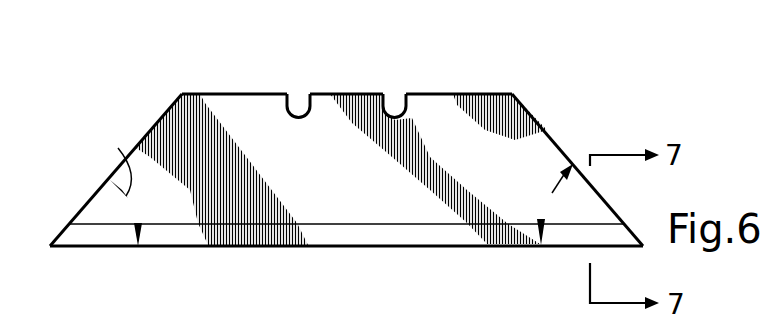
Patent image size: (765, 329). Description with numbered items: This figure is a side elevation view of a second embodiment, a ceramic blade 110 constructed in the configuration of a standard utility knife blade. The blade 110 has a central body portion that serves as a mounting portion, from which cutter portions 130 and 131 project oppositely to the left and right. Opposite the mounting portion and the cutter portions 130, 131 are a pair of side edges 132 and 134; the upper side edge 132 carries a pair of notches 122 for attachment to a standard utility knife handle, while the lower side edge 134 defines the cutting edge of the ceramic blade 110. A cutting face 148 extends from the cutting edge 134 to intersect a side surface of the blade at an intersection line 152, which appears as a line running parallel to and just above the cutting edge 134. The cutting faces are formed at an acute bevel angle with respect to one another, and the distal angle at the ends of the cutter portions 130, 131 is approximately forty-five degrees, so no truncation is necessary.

The ceramic blade 110 is at (243, 74).
The notches 122 is at (394, 112).
The cutter portion 130 is at (125, 163).
The cutter portion 131 is at (540, 163).
The side edge 132 is at (430, 95).
The side edge 134 is at (477, 247).
The cutting face 148 is at (355, 235).
The intersection line 152 is at (163, 225).